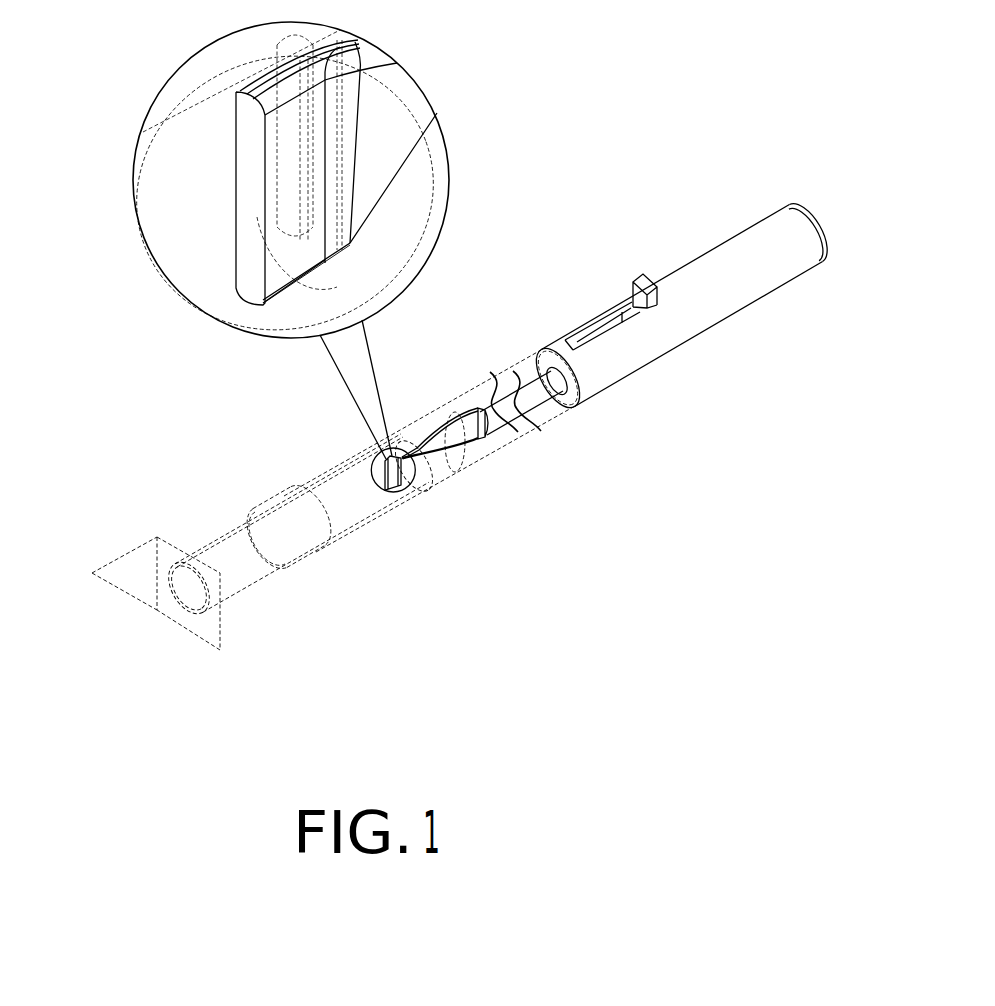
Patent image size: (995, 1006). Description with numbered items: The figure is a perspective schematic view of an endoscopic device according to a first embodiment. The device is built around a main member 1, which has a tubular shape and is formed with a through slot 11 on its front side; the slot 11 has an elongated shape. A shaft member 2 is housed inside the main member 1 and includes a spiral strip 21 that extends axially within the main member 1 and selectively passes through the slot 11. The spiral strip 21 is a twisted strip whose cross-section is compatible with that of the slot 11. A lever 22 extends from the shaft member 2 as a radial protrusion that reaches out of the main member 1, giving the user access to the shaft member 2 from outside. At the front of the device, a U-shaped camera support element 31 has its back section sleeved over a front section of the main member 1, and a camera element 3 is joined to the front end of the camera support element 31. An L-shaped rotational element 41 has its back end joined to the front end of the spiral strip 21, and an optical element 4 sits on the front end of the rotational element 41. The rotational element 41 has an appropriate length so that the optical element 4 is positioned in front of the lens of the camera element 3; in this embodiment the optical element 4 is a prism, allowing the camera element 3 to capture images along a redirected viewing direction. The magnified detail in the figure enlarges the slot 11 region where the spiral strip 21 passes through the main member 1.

The main member 1 is at (515, 363).
The through slot 11 is at (342, 152).
The shaft member 2 is at (503, 420).
The spiral strip 21 is at (473, 450).
The lever 22 is at (636, 277).
The camera element 3 is at (260, 582).
The camera support element 31 is at (367, 523).
The optical element 4 is at (120, 557).
The rotational element 41 is at (223, 530).